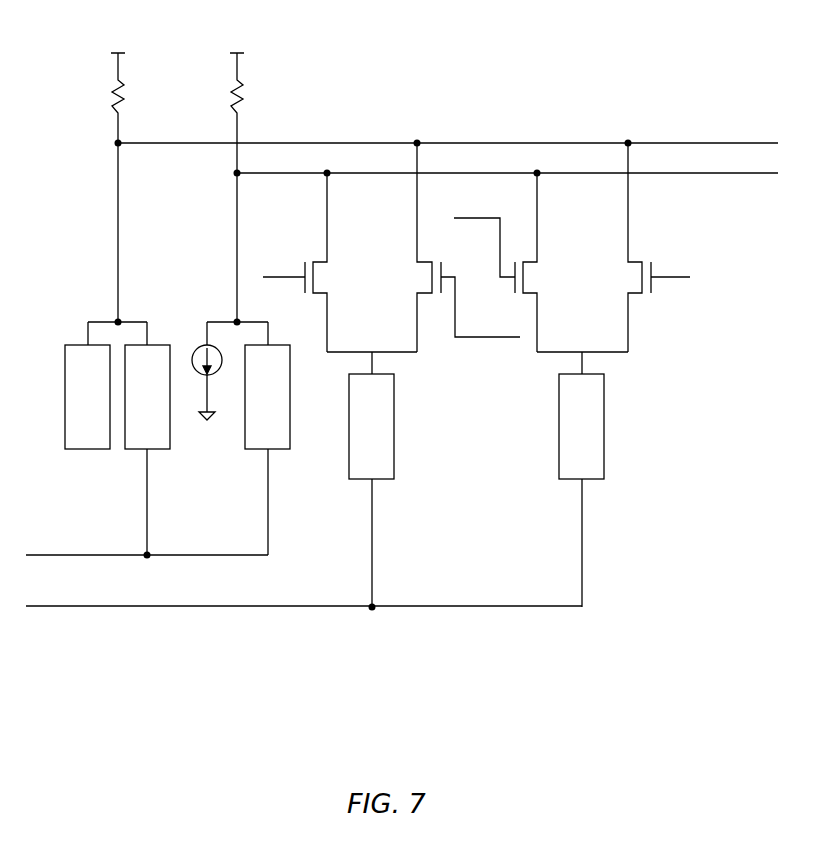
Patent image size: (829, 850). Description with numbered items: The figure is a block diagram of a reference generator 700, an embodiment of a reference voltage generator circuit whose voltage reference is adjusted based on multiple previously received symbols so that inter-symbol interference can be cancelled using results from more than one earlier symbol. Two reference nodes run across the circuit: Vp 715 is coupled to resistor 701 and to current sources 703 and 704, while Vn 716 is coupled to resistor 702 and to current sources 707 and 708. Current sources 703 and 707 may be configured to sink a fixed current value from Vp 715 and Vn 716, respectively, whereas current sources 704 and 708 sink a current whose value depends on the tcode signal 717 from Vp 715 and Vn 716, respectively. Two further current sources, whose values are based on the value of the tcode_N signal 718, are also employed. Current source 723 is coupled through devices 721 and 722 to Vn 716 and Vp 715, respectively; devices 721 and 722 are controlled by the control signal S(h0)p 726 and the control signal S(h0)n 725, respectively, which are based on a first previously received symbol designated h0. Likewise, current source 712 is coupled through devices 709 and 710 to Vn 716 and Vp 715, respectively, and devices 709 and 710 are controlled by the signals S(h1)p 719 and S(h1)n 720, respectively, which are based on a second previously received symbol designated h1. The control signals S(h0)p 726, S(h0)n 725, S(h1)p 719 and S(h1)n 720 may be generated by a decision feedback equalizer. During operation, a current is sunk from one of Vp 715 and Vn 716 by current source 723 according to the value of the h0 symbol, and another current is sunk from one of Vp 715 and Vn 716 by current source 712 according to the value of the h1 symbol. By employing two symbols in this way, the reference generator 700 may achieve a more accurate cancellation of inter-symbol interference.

The reference generator 700 is at (571, 71).
The resistor 701 is at (128, 92).
The resistor 702 is at (247, 92).
The current source 703 is at (76, 452).
The current source 704 is at (129, 452).
The current source 707 is at (199, 345).
The current source 708 is at (251, 452).
The device 709 is at (543, 255).
The device 710 is at (622, 302).
The current source 712 is at (566, 481).
The Vp 715 is at (448, 132).
The Vn 716 is at (507, 162).
The tcode n:1 717 is at (145, 557).
The tcode_N 2n:1 718 is at (303, 607).
The S(h1)p 719 is at (478, 237).
The S(h1)n 720 is at (679, 279).
The device 721 is at (333, 255).
The device 722 is at (413, 302).
The current source 723 is at (355, 481).
The S(h0)n 725 is at (480, 319).
The S(h0)p 726 is at (273, 279).